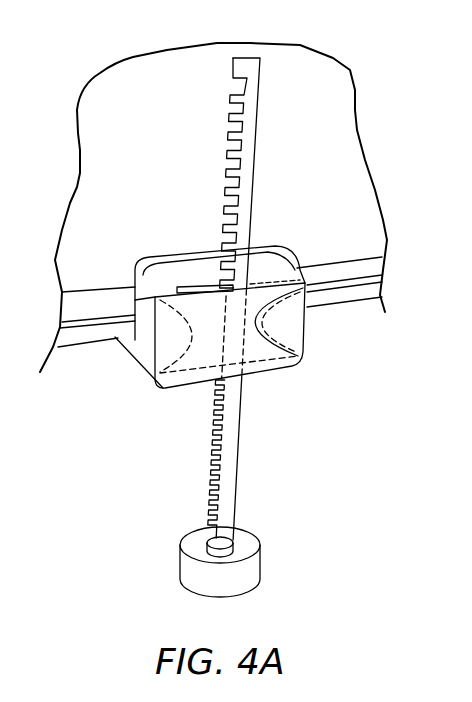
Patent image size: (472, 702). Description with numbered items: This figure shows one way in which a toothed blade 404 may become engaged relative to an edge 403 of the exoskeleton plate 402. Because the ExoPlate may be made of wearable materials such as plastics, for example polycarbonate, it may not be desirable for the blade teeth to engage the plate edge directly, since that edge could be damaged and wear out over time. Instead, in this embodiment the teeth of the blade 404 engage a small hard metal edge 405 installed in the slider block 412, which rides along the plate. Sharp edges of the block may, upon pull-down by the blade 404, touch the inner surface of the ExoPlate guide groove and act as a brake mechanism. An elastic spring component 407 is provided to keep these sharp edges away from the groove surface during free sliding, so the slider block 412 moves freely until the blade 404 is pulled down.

The exoskeleton plate 402 is at (95, 192).
The edge of the exoskeleton plate 403 is at (364, 292).
The toothed blade 404 is at (253, 97).
The small hard metal edge 405 is at (203, 284).
The elastic spring component 407 is at (127, 306).
The slider block 412 is at (288, 365).